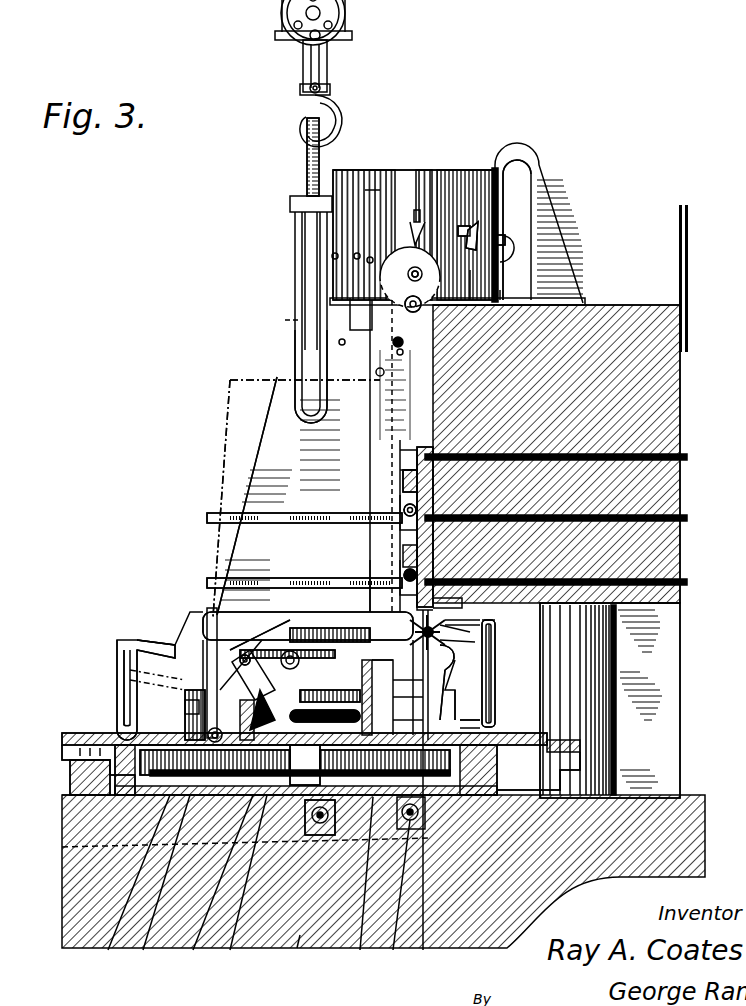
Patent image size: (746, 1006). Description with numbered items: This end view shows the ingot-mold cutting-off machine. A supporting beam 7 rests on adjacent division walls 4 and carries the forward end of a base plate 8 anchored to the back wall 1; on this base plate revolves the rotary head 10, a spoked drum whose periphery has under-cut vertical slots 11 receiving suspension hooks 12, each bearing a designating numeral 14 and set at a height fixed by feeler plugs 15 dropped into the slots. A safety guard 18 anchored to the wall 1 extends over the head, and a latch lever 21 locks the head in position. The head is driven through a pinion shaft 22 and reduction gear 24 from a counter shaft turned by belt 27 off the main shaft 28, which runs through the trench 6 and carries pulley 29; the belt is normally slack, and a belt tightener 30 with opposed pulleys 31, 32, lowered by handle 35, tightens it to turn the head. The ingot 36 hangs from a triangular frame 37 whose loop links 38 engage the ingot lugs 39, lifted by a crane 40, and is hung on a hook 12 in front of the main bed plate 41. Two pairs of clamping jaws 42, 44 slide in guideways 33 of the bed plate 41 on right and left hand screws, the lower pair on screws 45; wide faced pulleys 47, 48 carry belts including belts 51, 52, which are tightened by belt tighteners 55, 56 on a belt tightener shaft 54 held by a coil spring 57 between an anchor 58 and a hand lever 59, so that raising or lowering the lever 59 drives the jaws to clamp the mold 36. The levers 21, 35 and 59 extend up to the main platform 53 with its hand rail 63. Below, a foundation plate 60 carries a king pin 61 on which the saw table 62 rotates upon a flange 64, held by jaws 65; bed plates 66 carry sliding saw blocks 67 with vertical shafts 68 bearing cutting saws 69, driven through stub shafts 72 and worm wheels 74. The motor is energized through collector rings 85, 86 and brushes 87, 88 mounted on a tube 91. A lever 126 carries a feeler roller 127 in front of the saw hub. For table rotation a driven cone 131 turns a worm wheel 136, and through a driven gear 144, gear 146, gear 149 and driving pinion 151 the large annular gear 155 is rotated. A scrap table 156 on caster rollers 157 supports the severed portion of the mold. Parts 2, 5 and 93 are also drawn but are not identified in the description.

The back wall 1 is at (665, 380).
The base 2 is at (293, 958).
The division walls 4 is at (321, 492).
The body side wall 5 is at (598, 700).
The trench 6 is at (362, 889).
The supporting beam 7 is at (495, 243).
The base plate 8 is at (503, 296).
The rotary head 10 is at (405, 188).
The under-cut vertical slots 11 is at (370, 196).
The suspension hooks 12 is at (470, 240).
The designating numeral 14 is at (460, 230).
The feeler plugs 15 is at (470, 270).
The safety guard 18 is at (535, 165).
The latch lever 21 is at (368, 262).
The shaft 22 is at (421, 304).
The reduction gear 24 is at (285, 320).
The belt 27 is at (410, 262).
The main shaft 28 is at (397, 901).
The pulley 29 is at (432, 891).
The belt tightener 30 is at (404, 350).
The pulley 31 is at (395, 341).
The pulley 32 is at (384, 373).
The guideways 33 is at (460, 600).
The handle 35 is at (333, 254).
The ingot mold 36 is at (228, 430).
The triangular frame 37 is at (306, 160).
The loop links 38 is at (330, 380).
The ingot lugs 39 is at (313, 376).
The crane 40 is at (312, 75).
The main bed plate 41 is at (417, 470).
The clamping jaws 42 is at (306, 578).
The clamping jaws 44 is at (318, 513).
The lower pair of screws 45 is at (371, 586).
The wide faced pulley 47 is at (404, 574).
The wide faced pulley 48 is at (400, 480).
The belt 51 is at (397, 681).
The belt 52 is at (397, 697).
The main platform 53 is at (640, 306).
The belt tightener shaft 54 is at (443, 690).
The belt tighteners 55 is at (447, 668).
The belt tighteners 56 is at (440, 625).
The coil spring 57 is at (450, 632).
The anchor 58 is at (498, 620).
The hand lever 59 is at (355, 256).
The foundation plate 60 is at (135, 783).
The king pin 61 is at (320, 817).
The saw table 62 is at (75, 733).
The hand rail 63 is at (680, 210).
The flange 64 is at (112, 766).
The jaws 65 is at (75, 750).
The bed plates 66 is at (406, 717).
The saw blocks 67 is at (410, 655).
The vertical shafts 68 is at (290, 622).
The cutting saws 69 is at (250, 662).
The stub shafts 72 is at (334, 690).
The worm wheels 74 is at (360, 716).
The collector ring 85 is at (344, 768).
The collector ring 86 is at (385, 770).
The brush 87 is at (244, 887).
The brush 88 is at (220, 888).
The tube 91 is at (215, 769).
The pivot 93 is at (237, 659).
The lever 126 is at (330, 614).
The feeler roller 127 is at (287, 622).
The driven cone 131 is at (232, 655).
The worm wheel 136 is at (117, 669).
The driven gear 144 is at (160, 888).
The gear 146 is at (185, 690).
The gear 149 is at (185, 707).
The driving pinion 151 is at (125, 887).
The large annular gear 155 is at (475, 780).
The scrap table 156 is at (130, 642).
The caster rollers 157 is at (124, 700).